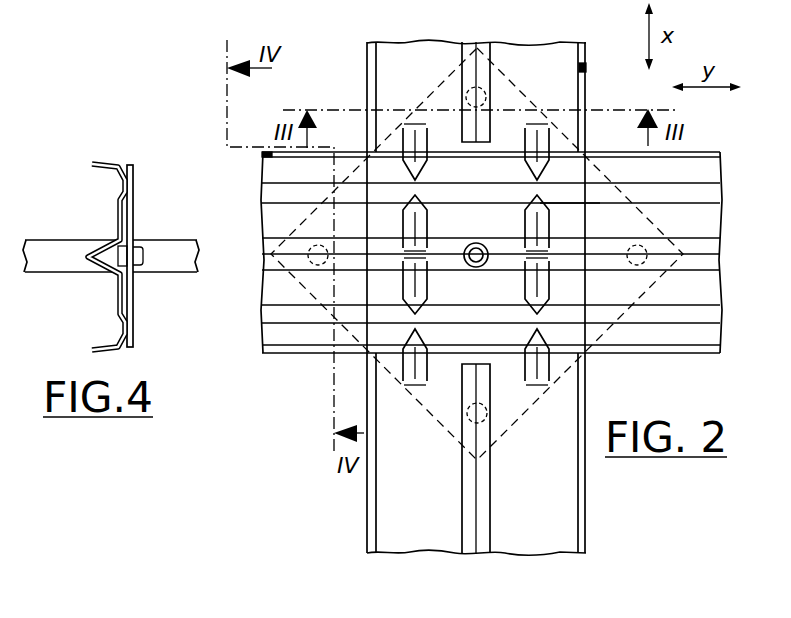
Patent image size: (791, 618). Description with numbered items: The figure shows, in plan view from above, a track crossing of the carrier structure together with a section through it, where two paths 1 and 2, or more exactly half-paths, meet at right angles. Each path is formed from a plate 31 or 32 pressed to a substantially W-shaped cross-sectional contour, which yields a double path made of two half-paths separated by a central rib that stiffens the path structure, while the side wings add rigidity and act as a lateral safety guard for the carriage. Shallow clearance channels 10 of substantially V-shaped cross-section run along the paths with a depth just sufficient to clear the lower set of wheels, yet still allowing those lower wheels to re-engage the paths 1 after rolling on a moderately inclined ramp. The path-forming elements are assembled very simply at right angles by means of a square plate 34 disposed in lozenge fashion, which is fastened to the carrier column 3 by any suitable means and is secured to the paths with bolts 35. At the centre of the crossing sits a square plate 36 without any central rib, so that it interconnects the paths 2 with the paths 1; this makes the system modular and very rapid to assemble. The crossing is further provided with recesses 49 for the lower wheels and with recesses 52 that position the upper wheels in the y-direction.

In FIG. 2, the path 1 is at (397, 62).
In FIG. 2, the path 2 is at (282, 227).
In FIG. 4, the path 2 is at (115, 223).
In FIG. 2, the carrier column 3 is at (484, 264).
In FIG. 4, the carrier column 3 is at (48, 257).
In FIG. 2, the clearance channel 10 is at (273, 167).
In FIG. 4, the clearance channel 10 is at (118, 185).
In FIG. 2, the plate 31 is at (585, 63).
In FIG. 2, the plate 32 is at (262, 155).
In FIG. 4, the plate 32 is at (100, 162).
In FIG. 2, the square plate 34 is at (438, 93).
In FIG. 4, the square plate 34 is at (132, 308).
In FIG. 2, the bolt 35 is at (481, 95).
In FIG. 2, the square plate 36 is at (555, 227).
In FIG. 2, the recess 49 is at (542, 370).
In FIG. 2, the recess 52 is at (413, 273).